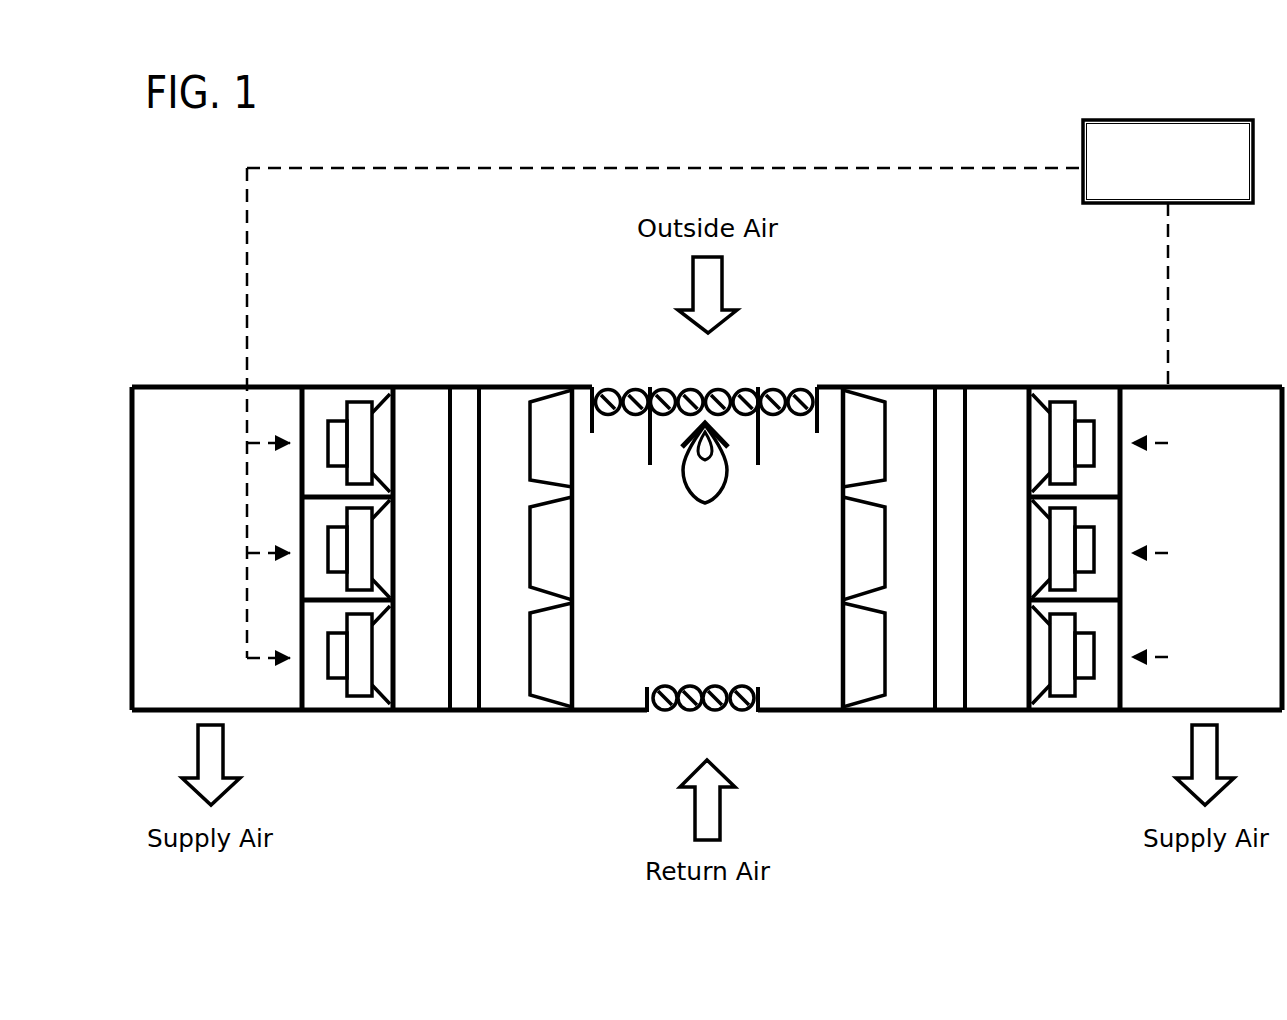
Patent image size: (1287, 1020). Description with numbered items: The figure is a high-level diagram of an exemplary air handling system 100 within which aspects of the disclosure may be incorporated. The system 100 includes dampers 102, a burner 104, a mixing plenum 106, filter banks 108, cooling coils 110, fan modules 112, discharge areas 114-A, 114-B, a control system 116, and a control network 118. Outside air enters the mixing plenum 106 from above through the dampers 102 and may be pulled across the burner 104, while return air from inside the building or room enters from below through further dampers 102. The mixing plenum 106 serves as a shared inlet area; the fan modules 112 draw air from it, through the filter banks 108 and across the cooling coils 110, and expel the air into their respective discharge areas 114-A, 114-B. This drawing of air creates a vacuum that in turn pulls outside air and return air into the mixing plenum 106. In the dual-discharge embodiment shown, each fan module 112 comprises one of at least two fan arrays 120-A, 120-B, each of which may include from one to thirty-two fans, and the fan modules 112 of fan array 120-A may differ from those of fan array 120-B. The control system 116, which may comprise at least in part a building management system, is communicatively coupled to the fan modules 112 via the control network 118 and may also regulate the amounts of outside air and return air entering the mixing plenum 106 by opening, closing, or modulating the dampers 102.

The air handling system 100 is at (570, 106).
The dampers 102 is at (720, 373).
The burner 104 is at (723, 457).
The mixing plenum 106 is at (704, 479).
The filter banks 108 is at (558, 370).
The cooling coils 110 is at (463, 370).
The fan modules 112 is at (333, 690).
The discharge area 114-A is at (170, 548).
The discharge area 114-B is at (1243, 548).
The control system 116 is at (1168, 161).
The control network 118 is at (913, 167).
The fan array 120-A is at (340, 370).
The fan array 120-B is at (1068, 373).